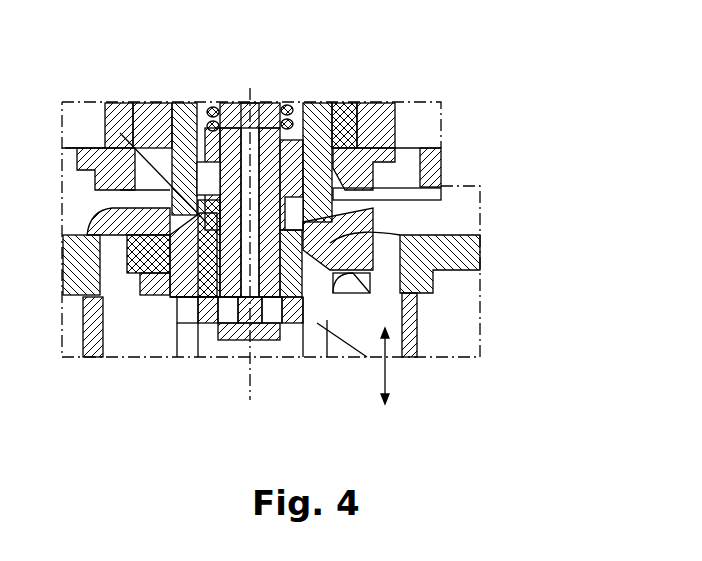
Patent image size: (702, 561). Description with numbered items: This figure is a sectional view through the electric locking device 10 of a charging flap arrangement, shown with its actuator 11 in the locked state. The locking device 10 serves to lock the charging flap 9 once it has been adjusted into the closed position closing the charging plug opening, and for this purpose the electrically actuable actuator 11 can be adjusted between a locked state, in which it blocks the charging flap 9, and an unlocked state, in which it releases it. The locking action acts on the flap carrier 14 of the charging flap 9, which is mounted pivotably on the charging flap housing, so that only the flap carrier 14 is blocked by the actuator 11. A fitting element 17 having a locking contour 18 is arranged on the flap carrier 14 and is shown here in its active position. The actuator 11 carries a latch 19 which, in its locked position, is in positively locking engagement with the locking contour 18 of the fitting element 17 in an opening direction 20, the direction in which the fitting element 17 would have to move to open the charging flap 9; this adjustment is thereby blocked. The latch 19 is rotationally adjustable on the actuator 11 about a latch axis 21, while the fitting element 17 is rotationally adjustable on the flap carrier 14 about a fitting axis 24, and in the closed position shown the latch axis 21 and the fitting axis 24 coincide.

The charging flap 9 is at (105, 358).
The electric locking device 10 is at (456, 149).
The actuator 11 is at (207, 225).
The flap carrier 14 is at (470, 272).
The fitting element 17 is at (140, 250).
The locking contour 18 is at (325, 320).
The latch 19 is at (290, 297).
The opening direction 20 is at (387, 378).
The latch axis 21 is at (253, 92).
The fitting axis 24 is at (241, 97).